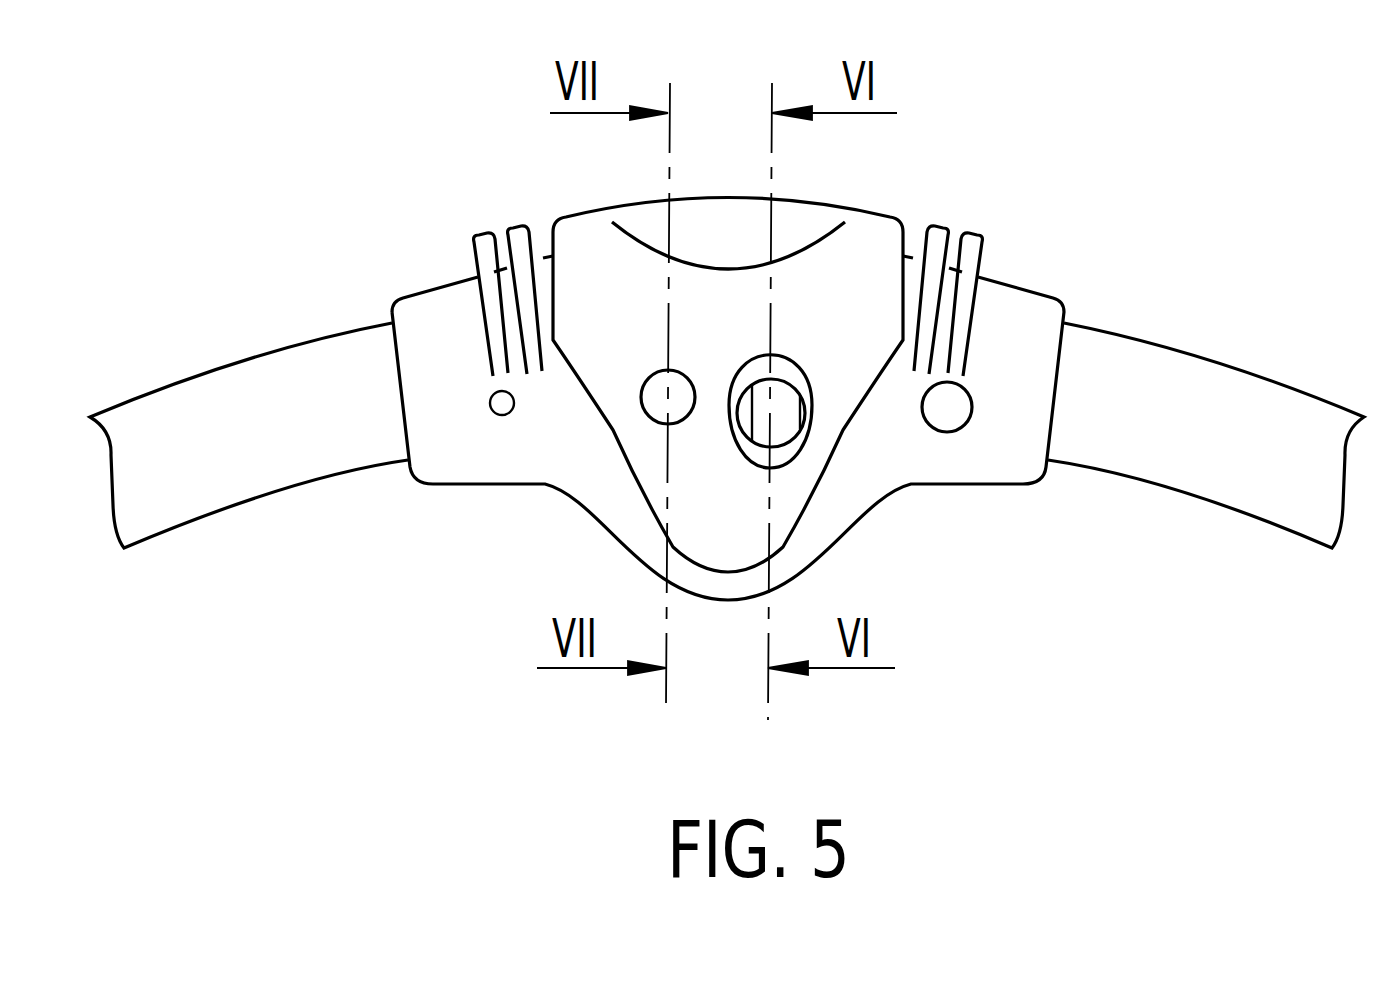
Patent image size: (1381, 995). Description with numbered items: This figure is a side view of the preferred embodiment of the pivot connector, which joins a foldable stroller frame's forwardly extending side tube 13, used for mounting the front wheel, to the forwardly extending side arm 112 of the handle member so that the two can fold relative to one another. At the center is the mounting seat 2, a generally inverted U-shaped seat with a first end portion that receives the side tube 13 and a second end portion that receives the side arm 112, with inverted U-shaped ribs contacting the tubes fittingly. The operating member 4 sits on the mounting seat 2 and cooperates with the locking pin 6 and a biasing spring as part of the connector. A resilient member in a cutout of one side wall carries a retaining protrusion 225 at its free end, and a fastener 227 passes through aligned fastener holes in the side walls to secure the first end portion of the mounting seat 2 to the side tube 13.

The mounting seat 2 is at (1008, 317).
The operating member 4 is at (867, 250).
The locking pin 6 is at (655, 398).
The side tube 13 is at (1178, 385).
The side arm 112 is at (188, 500).
The retaining protrusion 225 is at (780, 415).
The fastener 227 is at (945, 407).